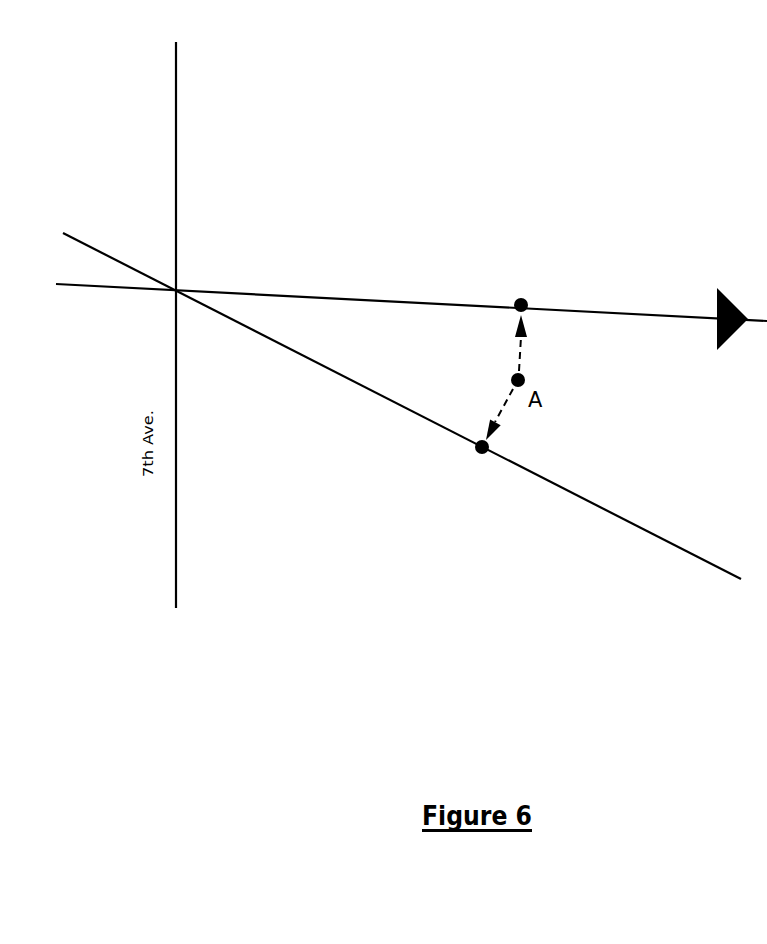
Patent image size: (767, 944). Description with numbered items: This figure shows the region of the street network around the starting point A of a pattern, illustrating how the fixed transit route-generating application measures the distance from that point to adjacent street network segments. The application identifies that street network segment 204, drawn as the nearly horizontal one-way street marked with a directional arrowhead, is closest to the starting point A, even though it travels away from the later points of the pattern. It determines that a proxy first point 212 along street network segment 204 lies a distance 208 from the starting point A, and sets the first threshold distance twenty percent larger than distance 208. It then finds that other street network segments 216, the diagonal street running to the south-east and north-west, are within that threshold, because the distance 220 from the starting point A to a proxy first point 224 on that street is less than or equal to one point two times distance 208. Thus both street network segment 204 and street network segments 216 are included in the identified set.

The street network segment 204 is at (353, 287).
The distance 208 is at (540, 343).
The proxy first point 212 is at (539, 289).
The street network segments 216 is at (573, 513).
The distance 220 is at (500, 397).
The proxy first point 224 is at (471, 470).